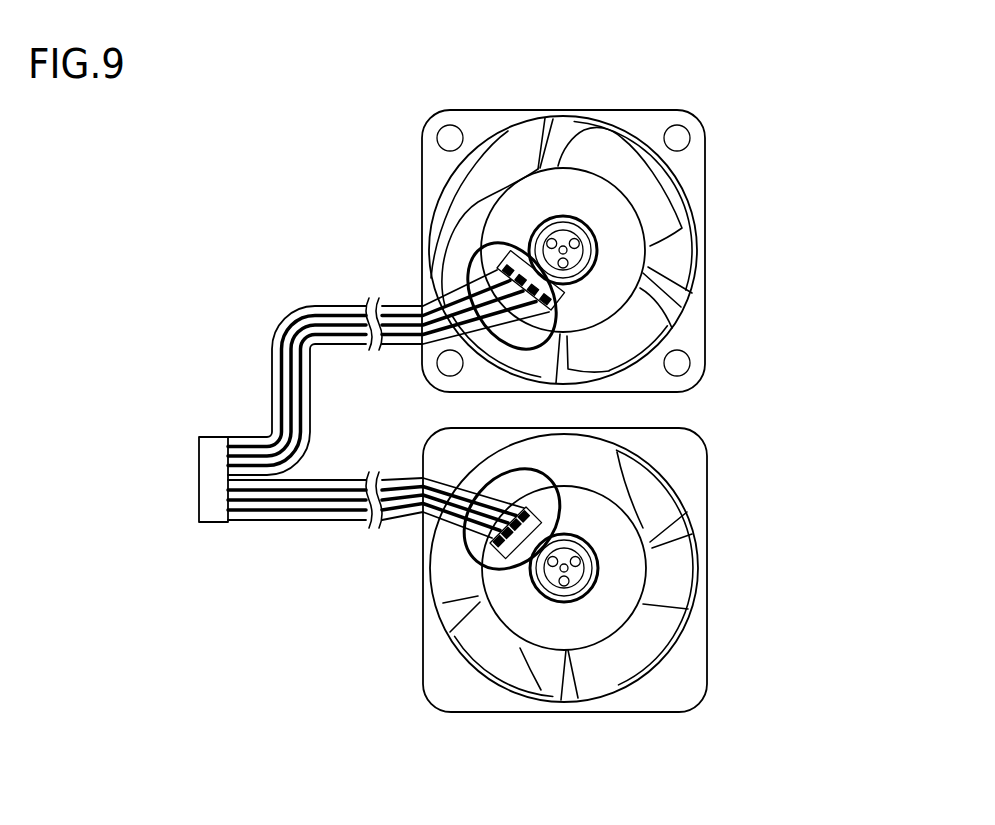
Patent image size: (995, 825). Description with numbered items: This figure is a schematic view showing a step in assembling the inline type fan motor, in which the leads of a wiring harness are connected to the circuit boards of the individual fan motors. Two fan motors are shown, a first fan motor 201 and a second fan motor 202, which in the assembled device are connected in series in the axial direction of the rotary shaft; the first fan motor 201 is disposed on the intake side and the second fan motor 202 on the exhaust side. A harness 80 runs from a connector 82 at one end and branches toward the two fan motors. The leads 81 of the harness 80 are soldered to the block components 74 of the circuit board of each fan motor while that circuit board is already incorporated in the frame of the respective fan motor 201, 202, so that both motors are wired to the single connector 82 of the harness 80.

The second fan motor 202 is at (702, 176).
The first fan motor 201 is at (694, 651).
The block component 74 is at (553, 308).
The harness 80 is at (364, 380).
The leads 81 is at (320, 310).
The connector 82 is at (199, 457).